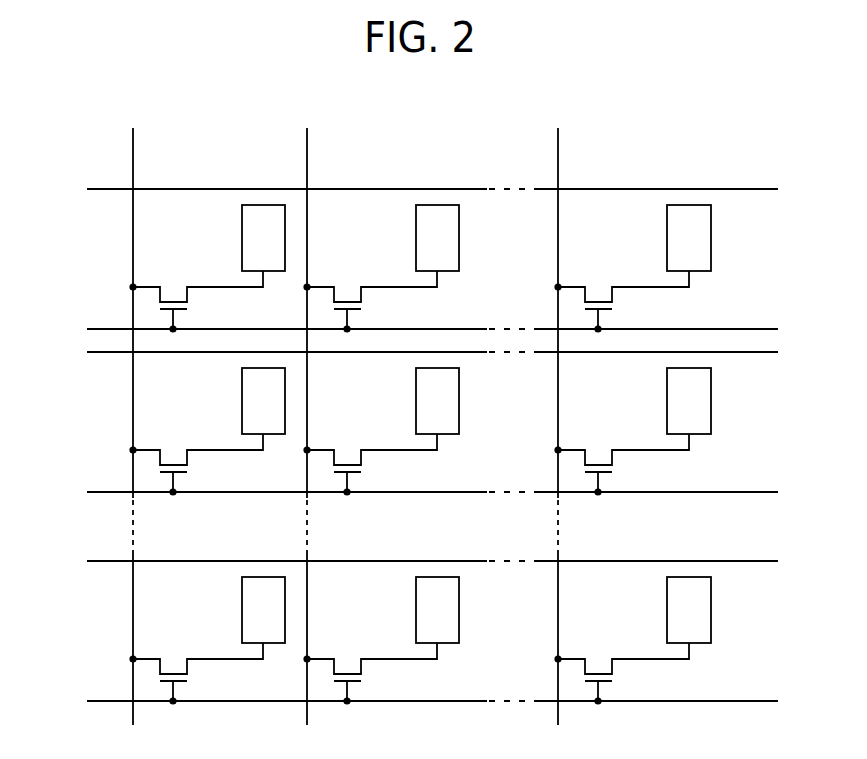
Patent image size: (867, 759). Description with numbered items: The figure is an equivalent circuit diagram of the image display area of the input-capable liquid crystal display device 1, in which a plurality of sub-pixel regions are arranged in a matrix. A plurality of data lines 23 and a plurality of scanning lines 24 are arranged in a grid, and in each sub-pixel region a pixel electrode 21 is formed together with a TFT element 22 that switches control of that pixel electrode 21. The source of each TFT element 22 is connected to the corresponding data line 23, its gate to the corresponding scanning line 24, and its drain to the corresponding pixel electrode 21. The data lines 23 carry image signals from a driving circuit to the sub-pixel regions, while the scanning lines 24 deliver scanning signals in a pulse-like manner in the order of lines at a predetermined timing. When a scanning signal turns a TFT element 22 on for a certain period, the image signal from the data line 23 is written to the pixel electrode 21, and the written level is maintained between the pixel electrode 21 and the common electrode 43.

The input-capable liquid crystal display device 1 is at (717, 99).
The pixel electrode 21 is at (262, 212).
The TFT element 22 is at (192, 307).
The data line 23 is at (133, 170).
The scanning line 24 is at (98, 329).
The common electrode 43 is at (95, 189).